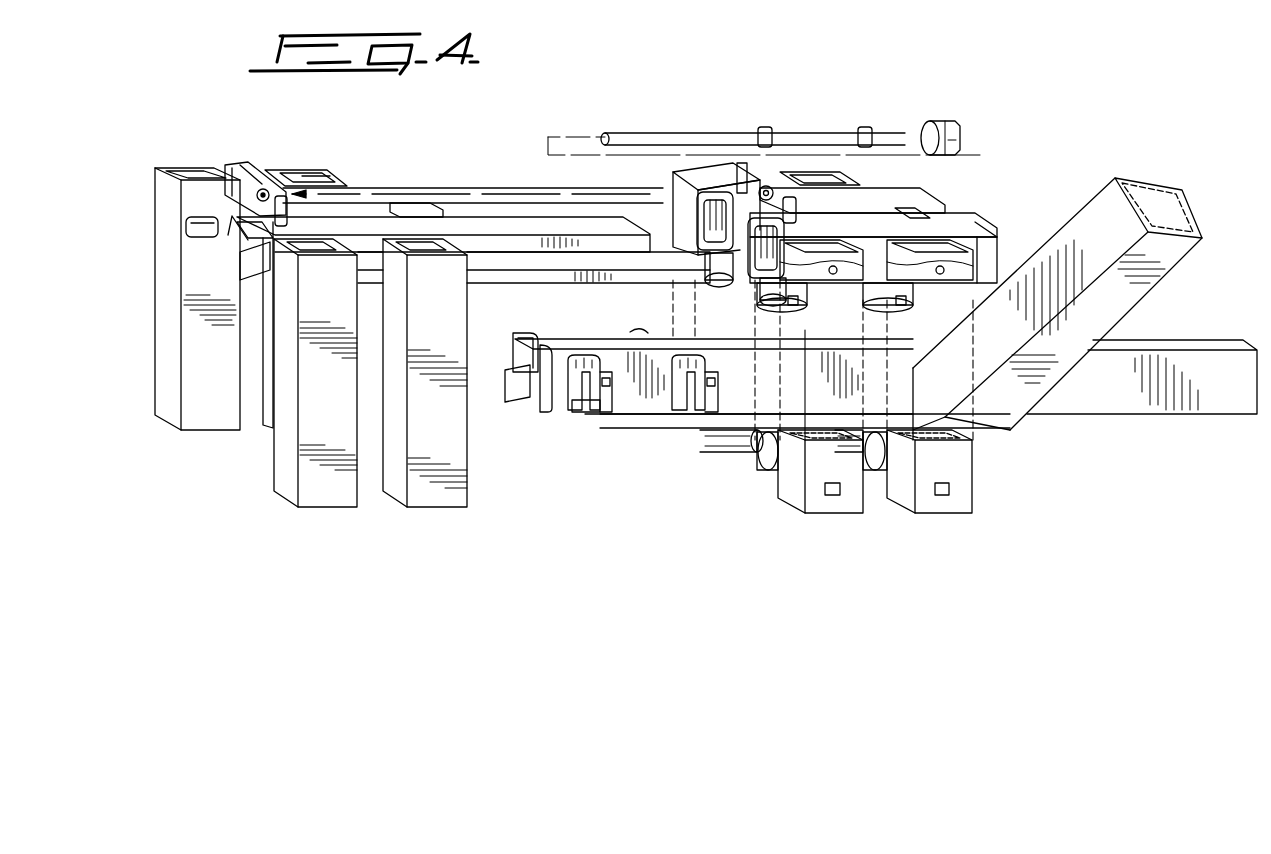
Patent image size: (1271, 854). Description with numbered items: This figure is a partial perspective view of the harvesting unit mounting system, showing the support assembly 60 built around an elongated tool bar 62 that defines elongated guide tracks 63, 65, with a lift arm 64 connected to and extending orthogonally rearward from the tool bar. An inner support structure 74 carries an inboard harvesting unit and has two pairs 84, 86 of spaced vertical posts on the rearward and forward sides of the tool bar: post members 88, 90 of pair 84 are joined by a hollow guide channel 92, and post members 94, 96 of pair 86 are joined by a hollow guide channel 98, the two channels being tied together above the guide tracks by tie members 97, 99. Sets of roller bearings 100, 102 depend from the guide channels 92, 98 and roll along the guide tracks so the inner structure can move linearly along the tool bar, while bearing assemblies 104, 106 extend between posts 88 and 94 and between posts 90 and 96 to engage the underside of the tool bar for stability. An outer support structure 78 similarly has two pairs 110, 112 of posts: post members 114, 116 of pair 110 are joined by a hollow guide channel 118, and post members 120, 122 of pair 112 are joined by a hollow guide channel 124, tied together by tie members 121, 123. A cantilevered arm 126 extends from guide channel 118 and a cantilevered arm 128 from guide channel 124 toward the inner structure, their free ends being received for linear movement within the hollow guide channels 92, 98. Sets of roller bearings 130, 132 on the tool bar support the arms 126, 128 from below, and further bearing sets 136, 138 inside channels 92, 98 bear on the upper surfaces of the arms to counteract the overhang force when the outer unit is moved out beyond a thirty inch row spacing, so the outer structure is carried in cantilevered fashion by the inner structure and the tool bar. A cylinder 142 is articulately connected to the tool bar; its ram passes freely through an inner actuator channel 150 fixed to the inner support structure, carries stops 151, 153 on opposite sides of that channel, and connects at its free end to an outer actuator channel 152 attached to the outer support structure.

The support assembly 60 is at (1095, 172).
The tool bar 62 is at (1140, 412).
The guide track 63 is at (660, 418).
The lift arm 64 is at (1113, 305).
The guide track 65 is at (504, 374).
The support structure 74 is at (958, 190).
The support structure 78 is at (372, 163).
The pair of tubes or posts 84 is at (845, 517).
The pair of tubes or posts 86 is at (672, 174).
The post member 88 is at (788, 498).
The post member 90 is at (960, 500).
The hollow guide channel 92 is at (990, 252).
The post member 94 is at (690, 185).
The post member 96 is at (848, 178).
The tie member 97 is at (922, 210).
The hollow guide channel 98 is at (940, 200).
The tie member 99 is at (786, 205).
The set of roller bearings 100 is at (875, 295).
The set of roller bearings 102 is at (718, 285).
The bearing assembly 104 is at (763, 468).
The bearing assembly 106 is at (886, 462).
The pair of tubes or posts 110 is at (280, 500).
The pair of tubes or posts 112 is at (332, 168).
The post member 114 is at (332, 498).
The post member 116 is at (439, 498).
The hollow guide channel 118 is at (489, 268).
The post member 120 is at (186, 150).
The tie member 121 is at (240, 213).
The post member 122 is at (308, 168).
The tie member 123 is at (436, 203).
The hollow guide channel 124 is at (398, 190).
The cantilevered arm 126 is at (553, 282).
The cantilevered arm 128 is at (544, 222).
The set of roller bearings 130 is at (606, 410).
The set of roller bearings 132 is at (648, 338).
The set of roller bearings 136 is at (748, 243).
The set of roller bearings 138 is at (697, 213).
The cylinder 142 is at (963, 127).
The inner actuator channel 150 is at (745, 190).
The stop 151 is at (863, 126).
The outer actuator channel 152 is at (244, 170).
The stop 153 is at (763, 126).